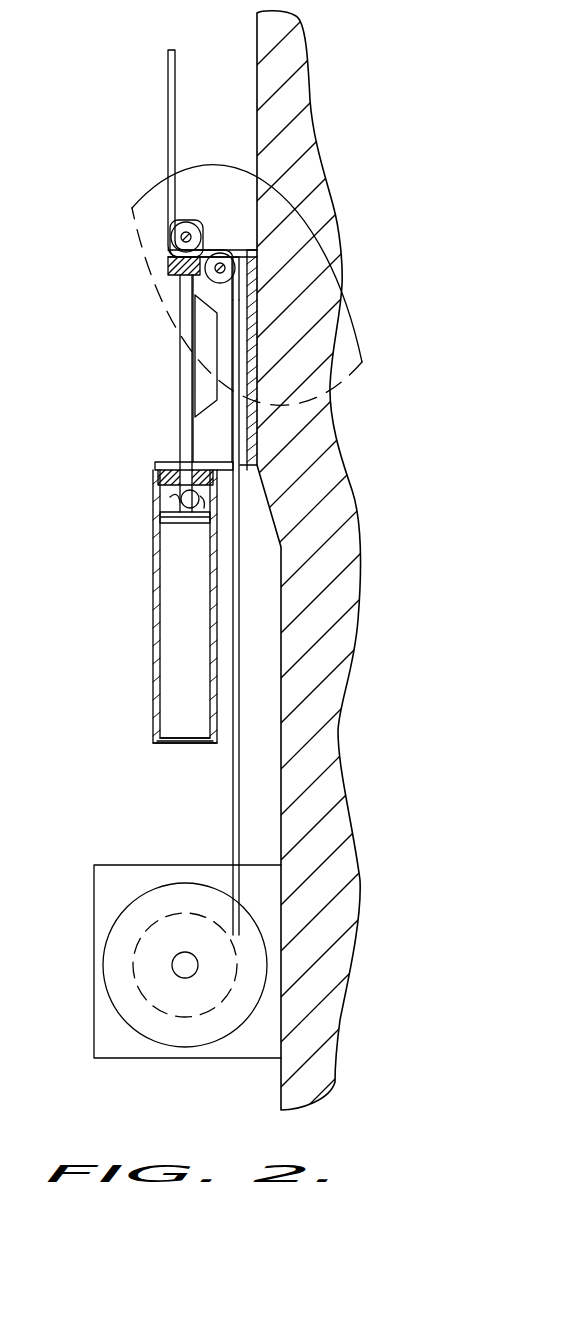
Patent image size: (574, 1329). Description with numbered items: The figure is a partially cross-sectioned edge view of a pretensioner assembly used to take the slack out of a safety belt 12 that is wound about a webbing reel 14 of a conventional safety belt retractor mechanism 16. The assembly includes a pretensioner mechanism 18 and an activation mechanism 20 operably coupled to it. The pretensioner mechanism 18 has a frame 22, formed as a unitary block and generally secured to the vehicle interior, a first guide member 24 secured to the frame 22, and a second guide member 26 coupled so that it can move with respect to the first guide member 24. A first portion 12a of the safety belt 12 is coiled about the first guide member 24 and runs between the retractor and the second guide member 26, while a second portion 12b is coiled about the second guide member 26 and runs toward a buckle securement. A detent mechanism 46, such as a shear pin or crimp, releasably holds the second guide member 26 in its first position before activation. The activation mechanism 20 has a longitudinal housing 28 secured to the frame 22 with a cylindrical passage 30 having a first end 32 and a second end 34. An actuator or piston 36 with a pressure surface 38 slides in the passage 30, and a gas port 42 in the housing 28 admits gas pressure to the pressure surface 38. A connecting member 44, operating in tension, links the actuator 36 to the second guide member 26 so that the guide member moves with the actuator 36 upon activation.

The safety belt 12 is at (173, 473).
The first portion of safety belt 12a is at (232, 840).
The second portion of safety belt 12b is at (175, 112).
The webbing reel 14 is at (140, 995).
The safety belt retractor mechanism 16 is at (212, 1058).
The pretensioner mechanism 18 is at (148, 236).
The activation mechanism 20 is at (145, 617).
The frame 22 is at (213, 433).
The first guide member 24 is at (223, 262).
The second guide member 26 is at (177, 230).
The longitudinal housing 28 is at (217, 611).
The cylindrical passage 30 is at (188, 618).
The first end of passage 32 is at (195, 547).
The second end of passage 34 is at (187, 727).
The actuator or piston 36 is at (178, 527).
The pressure surface 38 is at (160, 498).
The gas port 42 is at (158, 475).
The connecting member 44 is at (185, 383).
The detent mechanism 46 is at (160, 252).